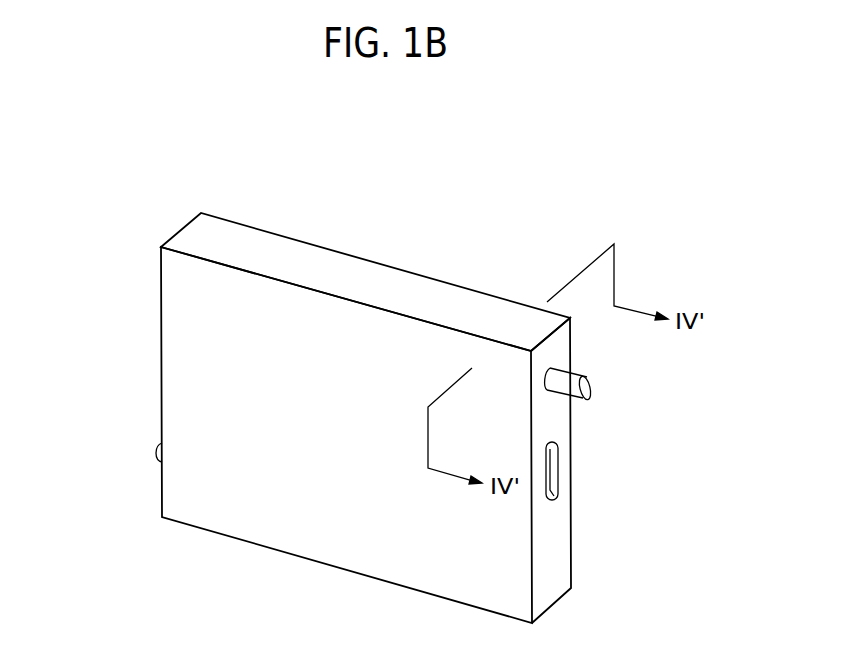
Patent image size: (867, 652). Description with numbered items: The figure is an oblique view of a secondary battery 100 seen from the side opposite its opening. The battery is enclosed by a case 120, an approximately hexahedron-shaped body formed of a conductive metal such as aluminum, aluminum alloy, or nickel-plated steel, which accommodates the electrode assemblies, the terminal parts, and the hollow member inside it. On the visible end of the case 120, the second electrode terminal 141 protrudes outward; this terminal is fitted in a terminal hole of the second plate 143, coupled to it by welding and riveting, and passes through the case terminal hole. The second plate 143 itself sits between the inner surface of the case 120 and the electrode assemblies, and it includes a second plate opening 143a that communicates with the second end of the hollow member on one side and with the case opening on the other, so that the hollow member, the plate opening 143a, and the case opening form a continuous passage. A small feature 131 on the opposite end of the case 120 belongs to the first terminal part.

The secondary battery 100 is at (162, 156).
The case 120 is at (323, 548).
The electrode terminal 131 is at (157, 453).
The second electrode terminal 141 is at (580, 372).
The second plate 143 is at (560, 553).
The second plate opening 143a is at (552, 468).